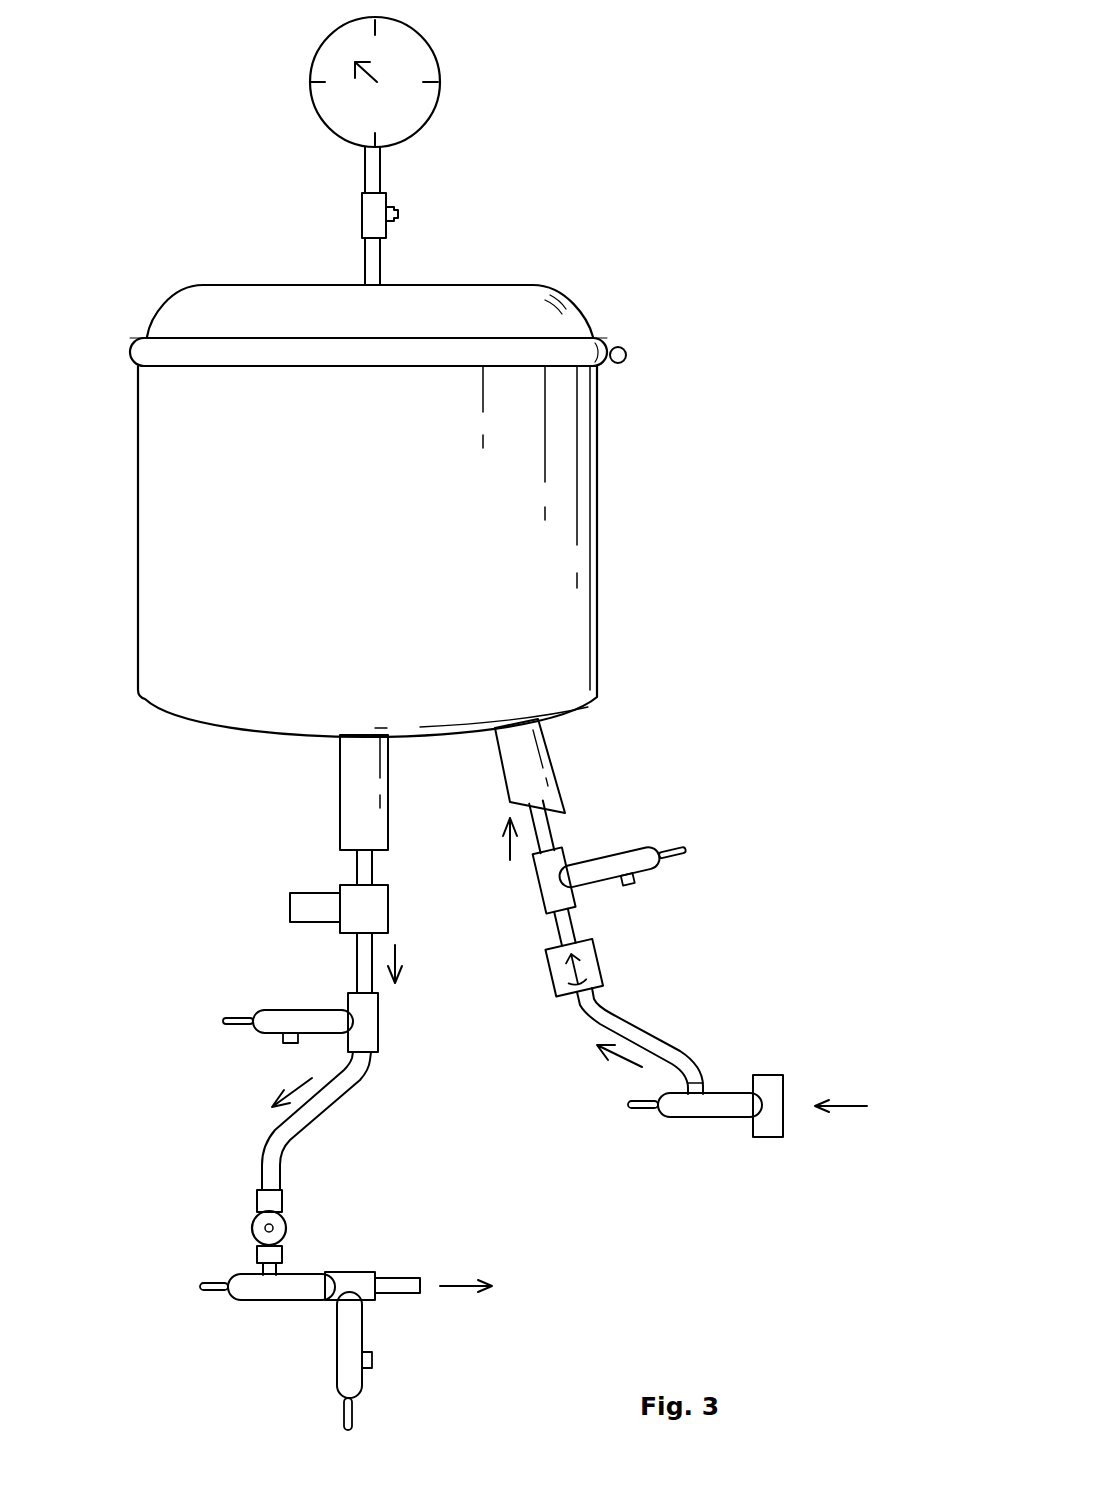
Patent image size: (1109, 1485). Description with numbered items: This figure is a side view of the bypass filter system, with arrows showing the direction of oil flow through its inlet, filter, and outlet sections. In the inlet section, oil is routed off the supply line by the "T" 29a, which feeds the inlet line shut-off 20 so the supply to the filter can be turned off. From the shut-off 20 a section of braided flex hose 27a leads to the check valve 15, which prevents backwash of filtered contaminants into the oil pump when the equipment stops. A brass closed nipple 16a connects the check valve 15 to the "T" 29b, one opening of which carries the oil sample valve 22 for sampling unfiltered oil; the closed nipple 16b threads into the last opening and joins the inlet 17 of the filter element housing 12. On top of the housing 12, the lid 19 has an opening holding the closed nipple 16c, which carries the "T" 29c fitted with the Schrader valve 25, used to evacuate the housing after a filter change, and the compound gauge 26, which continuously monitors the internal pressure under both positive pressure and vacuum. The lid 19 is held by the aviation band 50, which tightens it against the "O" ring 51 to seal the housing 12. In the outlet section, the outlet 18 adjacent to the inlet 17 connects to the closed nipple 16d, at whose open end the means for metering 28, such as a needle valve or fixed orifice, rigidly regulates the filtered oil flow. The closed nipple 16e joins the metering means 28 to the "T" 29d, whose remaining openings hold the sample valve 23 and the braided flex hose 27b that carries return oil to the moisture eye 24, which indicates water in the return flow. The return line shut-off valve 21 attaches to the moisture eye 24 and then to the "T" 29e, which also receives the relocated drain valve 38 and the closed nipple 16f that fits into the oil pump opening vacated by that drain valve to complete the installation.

The filter element housing 12 is at (597, 546).
The check valve 15 is at (602, 960).
The brass closed nipple 16a is at (577, 921).
The closed nipple 16b is at (545, 843).
The closed nipple 16c is at (380, 266).
The closed nipple 16d is at (357, 867).
The closed nipple 16e is at (357, 970).
The closed nipple 16f is at (403, 1295).
The inlet 17 is at (552, 757).
The outlet 18 is at (340, 795).
The lid 19 is at (575, 306).
The inlet line shut-off 20 is at (690, 1117).
The return line shut-off valve 21 is at (268, 1300).
The oil sample valve 22 is at (660, 866).
The sample valve 23 is at (253, 1033).
The moisture eye 24 is at (287, 1226).
The Schrader valve 25 is at (398, 214).
The compound gauge 26 is at (440, 78).
The braided flex hose 27a is at (678, 1037).
The braided flex hose 27b is at (343, 1100).
The means for metering 28 is at (388, 906).
The T 29a is at (767, 1137).
The T 29b is at (540, 883).
The T 29c is at (362, 212).
The T 29d is at (378, 1022).
The T 29e is at (365, 1272).
The drain valve 38 is at (335, 1376).
The aviation band 50 is at (627, 353).
The O ring 51 is at (327, 367).